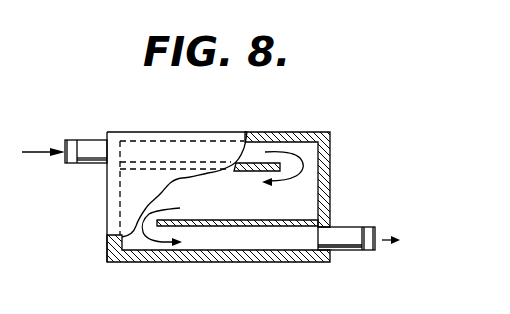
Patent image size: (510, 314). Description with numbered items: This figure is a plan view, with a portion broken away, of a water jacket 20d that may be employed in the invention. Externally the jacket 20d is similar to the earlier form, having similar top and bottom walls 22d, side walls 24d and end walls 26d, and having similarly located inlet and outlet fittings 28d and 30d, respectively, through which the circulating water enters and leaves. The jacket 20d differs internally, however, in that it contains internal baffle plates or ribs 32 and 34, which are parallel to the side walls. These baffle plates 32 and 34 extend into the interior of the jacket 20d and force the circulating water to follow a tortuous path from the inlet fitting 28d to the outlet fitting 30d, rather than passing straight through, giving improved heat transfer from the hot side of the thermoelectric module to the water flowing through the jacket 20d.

The jacket 20d is at (336, 139).
The top and bottom walls 22d is at (137, 185).
The side walls 24d is at (270, 135).
The end walls 26d is at (330, 198).
The inlet fitting 28d is at (92, 146).
The outlet fitting 30d is at (348, 248).
The internal baffle plate 32 is at (245, 172).
The internal baffle plate 34 is at (250, 222).